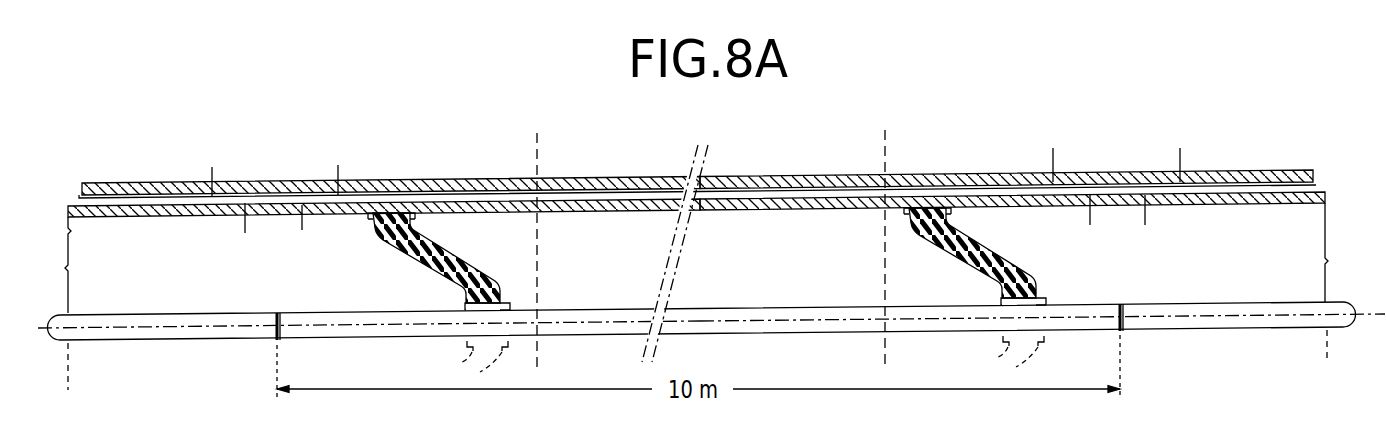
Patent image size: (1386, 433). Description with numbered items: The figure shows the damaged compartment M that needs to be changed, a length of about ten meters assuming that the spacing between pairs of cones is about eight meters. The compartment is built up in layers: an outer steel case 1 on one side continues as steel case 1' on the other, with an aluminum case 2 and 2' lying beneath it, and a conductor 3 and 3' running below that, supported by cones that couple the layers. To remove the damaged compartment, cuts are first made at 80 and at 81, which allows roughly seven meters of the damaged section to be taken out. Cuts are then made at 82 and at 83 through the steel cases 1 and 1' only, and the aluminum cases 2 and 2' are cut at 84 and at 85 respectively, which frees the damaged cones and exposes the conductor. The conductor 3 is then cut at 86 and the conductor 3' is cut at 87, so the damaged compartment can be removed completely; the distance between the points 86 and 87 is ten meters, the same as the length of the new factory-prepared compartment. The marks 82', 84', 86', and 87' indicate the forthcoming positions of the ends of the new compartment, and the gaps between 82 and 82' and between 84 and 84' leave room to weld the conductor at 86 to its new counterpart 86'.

The steel case 1 is at (389, 166).
The steel case 1' is at (1008, 159).
The aluminum case 2 is at (384, 230).
The aluminum case 2' is at (1012, 222).
The conductor 3 is at (369, 348).
The conductor 3' is at (1042, 337).
The cut point 80 is at (537, 152).
The cut point 81 is at (885, 150).
The cut point 82 is at (232, 165).
The end position mark 82' is at (364, 163).
The cut point 83 is at (1180, 152).
The cut point 84 is at (216, 234).
The end position mark 84' is at (331, 233).
The cut point 85 is at (1145, 222).
The conductor cut point 86 is at (299, 307).
The end position mark 86' is at (247, 350).
The conductor cut point 87 is at (1096, 339).
The end position mark 87' is at (1152, 293).
The compartment M is at (765, 266).